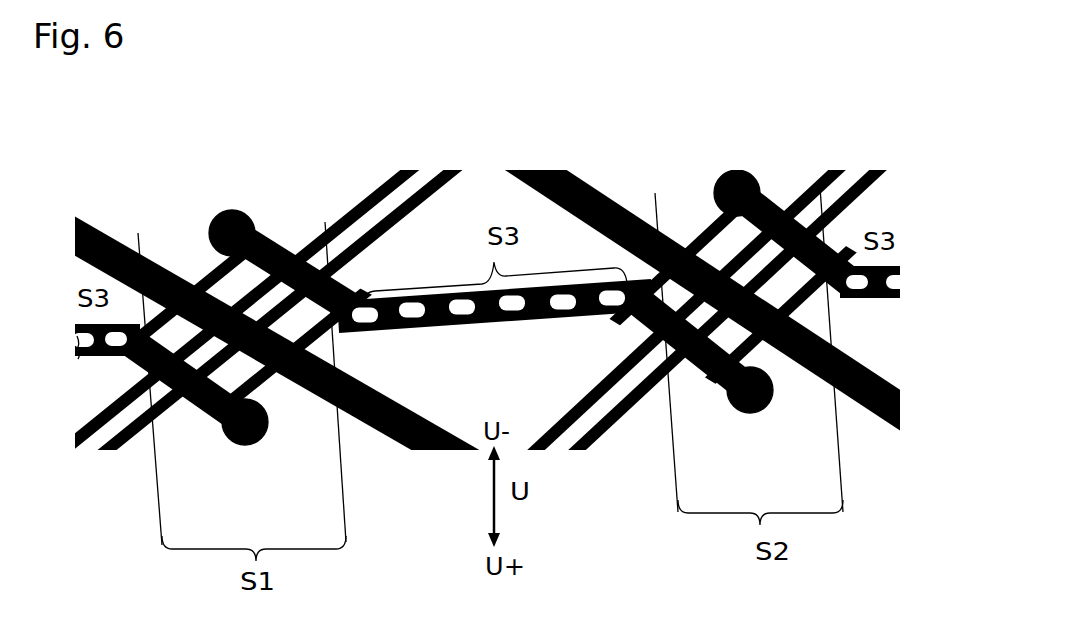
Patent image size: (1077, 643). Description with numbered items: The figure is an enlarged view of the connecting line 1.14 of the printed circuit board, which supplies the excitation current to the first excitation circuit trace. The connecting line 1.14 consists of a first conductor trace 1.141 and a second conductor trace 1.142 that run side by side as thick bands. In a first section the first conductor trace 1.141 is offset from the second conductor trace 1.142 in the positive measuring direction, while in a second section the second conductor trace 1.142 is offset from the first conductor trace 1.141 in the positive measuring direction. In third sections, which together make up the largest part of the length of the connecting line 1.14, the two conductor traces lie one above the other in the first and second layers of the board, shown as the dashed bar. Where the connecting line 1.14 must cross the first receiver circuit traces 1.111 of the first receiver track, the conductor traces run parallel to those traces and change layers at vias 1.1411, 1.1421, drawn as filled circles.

The connecting line 1.14 is at (497, 327).
The first conductor trace 1.141 is at (342, 333).
The second conductor trace 1.142 is at (188, 262).
The via 1.1411 is at (245, 437).
The connection node of second conductor section 1.1421 is at (233, 213).
The first receiver circuit trace 1.111 is at (626, 395).